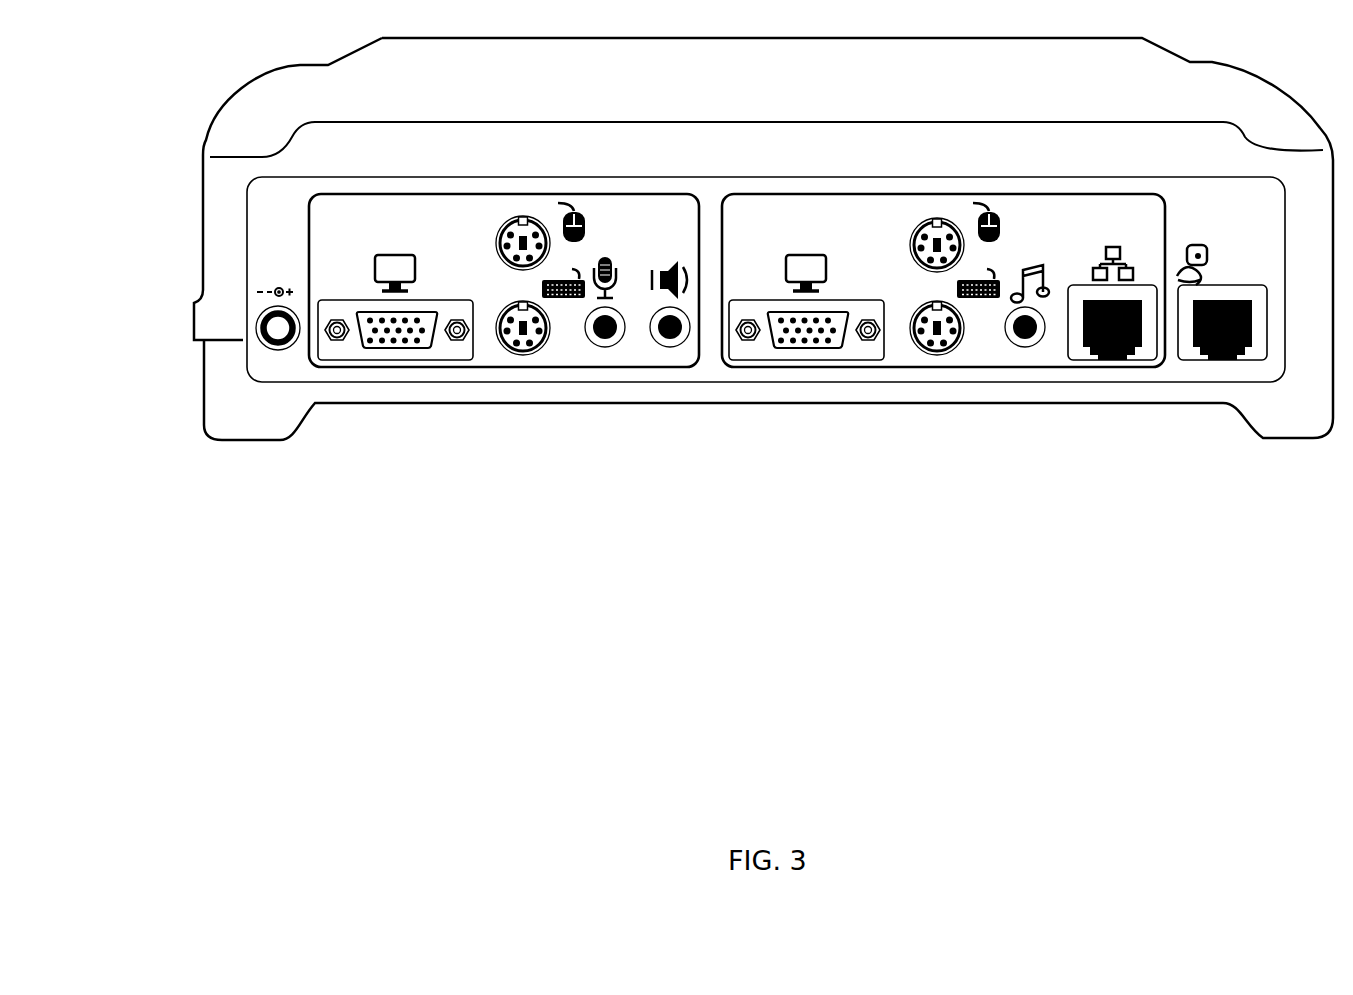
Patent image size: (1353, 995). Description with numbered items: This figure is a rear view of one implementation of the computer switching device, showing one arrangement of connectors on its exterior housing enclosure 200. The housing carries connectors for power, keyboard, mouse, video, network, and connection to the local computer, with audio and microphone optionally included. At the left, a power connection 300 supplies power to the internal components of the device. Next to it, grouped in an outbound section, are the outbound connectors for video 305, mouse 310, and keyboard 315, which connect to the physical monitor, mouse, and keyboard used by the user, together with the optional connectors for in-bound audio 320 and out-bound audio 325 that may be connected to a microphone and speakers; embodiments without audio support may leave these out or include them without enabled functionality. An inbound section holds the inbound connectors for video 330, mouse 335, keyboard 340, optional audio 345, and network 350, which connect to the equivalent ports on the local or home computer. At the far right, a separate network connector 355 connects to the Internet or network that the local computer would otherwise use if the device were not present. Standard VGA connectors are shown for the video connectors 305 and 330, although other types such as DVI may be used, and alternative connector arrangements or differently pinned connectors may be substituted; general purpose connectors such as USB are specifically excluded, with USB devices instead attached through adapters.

The exterior housing enclosure 200 is at (203, 203).
The power connection 300 is at (278, 350).
The outbound video connector 305 is at (395, 362).
The outbound mouse connector 310 is at (497, 253).
The outbound keyboard connector 315 is at (520, 356).
The in-bound audio connector 320 is at (605, 347).
The out-bound audio connector 325 is at (670, 347).
The inbound video connector 330 is at (805, 360).
The inbound mouse connector 335 is at (913, 253).
The inbound keyboard connector 340 is at (937, 355).
The inbound audio connector 345 is at (1025, 347).
The inbound network connector 350 is at (1113, 360).
The network connector 355 is at (1220, 362).